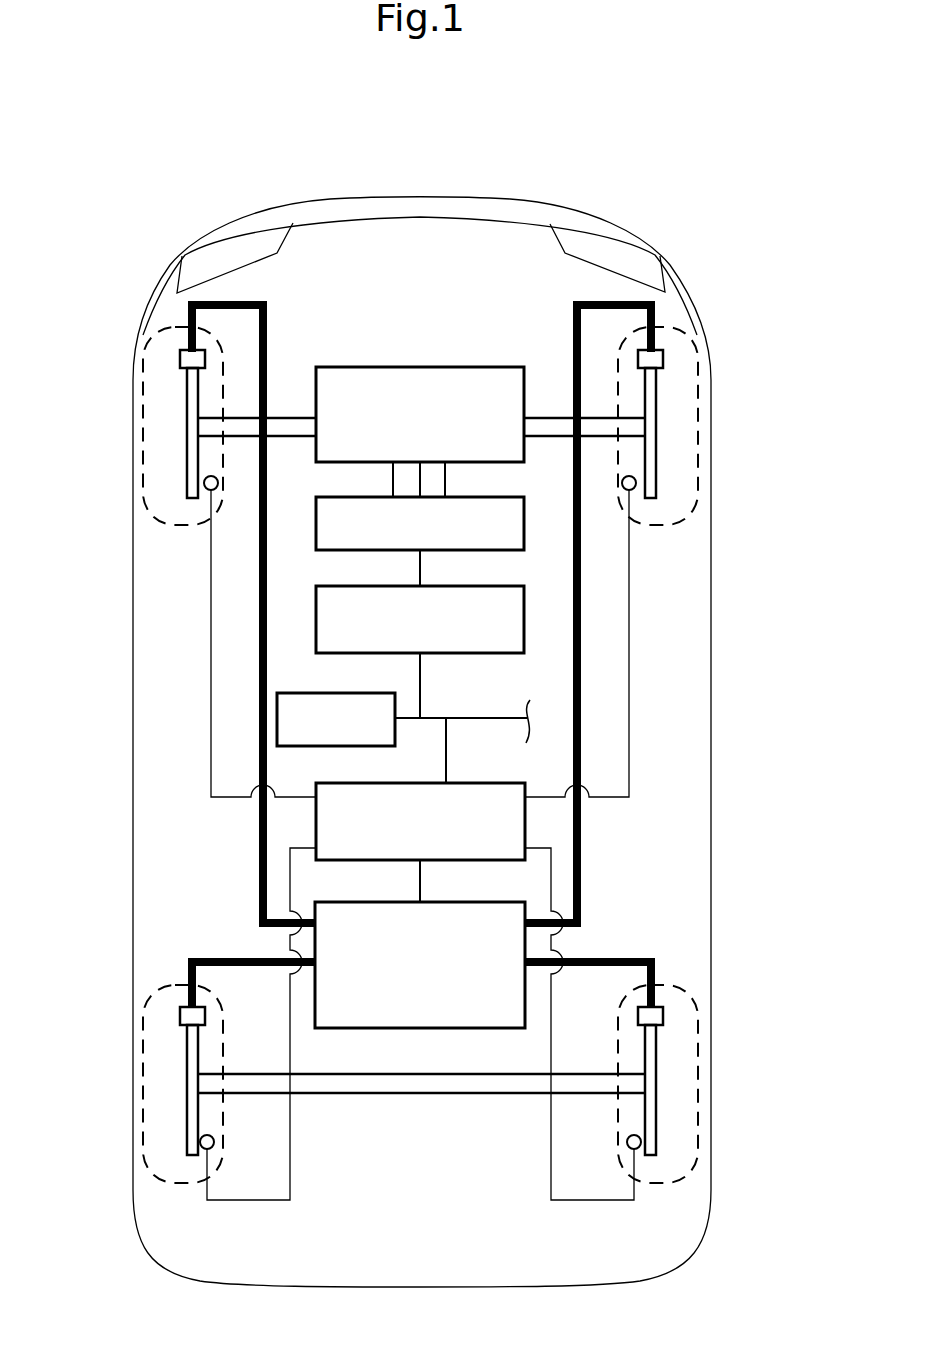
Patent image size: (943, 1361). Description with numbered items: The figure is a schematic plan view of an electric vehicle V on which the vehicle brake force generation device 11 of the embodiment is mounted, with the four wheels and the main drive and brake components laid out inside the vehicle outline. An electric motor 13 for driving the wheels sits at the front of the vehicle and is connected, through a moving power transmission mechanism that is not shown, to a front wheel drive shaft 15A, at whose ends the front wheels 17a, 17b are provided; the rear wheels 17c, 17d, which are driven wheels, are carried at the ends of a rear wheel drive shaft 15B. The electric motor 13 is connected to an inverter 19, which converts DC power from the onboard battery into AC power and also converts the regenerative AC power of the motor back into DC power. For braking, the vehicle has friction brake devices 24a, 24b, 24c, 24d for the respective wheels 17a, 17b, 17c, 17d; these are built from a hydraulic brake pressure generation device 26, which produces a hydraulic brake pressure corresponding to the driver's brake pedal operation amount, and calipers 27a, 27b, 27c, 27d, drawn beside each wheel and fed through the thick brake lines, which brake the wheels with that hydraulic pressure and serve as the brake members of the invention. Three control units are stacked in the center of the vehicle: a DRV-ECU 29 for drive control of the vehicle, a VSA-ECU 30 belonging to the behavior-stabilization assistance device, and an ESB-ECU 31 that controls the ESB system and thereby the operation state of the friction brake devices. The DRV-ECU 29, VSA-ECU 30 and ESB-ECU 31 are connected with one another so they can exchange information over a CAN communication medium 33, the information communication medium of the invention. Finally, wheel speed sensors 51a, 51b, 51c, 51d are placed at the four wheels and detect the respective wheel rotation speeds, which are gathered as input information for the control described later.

The vehicle brake force generation device 11 is at (517, 182).
The electric vehicle V is at (648, 232).
The electric motor 13 is at (505, 367).
The front wheel drive shaft 15A is at (288, 428).
The rear wheel drive shaft 15B is at (415, 1093).
The wheel 17a is at (143, 352).
The wheel 17b is at (702, 358).
The wheel 17c is at (143, 998).
The wheel 17d is at (700, 1027).
The inverter 19 is at (505, 497).
The friction brake device 24a is at (165, 348).
The friction brake device 24b is at (673, 322).
The friction brake device 24c is at (160, 978).
The friction brake device 24d is at (680, 1000).
The hydraulic brake pressure generation device 26 is at (480, 902).
The caliper 27a is at (183, 362).
The caliper 27b is at (660, 362).
The caliper 27c is at (180, 1015).
The caliper 27d is at (662, 1030).
The DRV-ECU 29 is at (505, 586).
The VSA-ECU 30 is at (350, 693).
The ESB-ECU 31 is at (480, 783).
The CAN communication medium 33 is at (440, 718).
The wheel speed sensor 51a is at (205, 490).
The wheel speed sensor 51b is at (636, 487).
The wheel speed sensor 51c is at (202, 1150).
The wheel speed sensor 51d is at (641, 1150).